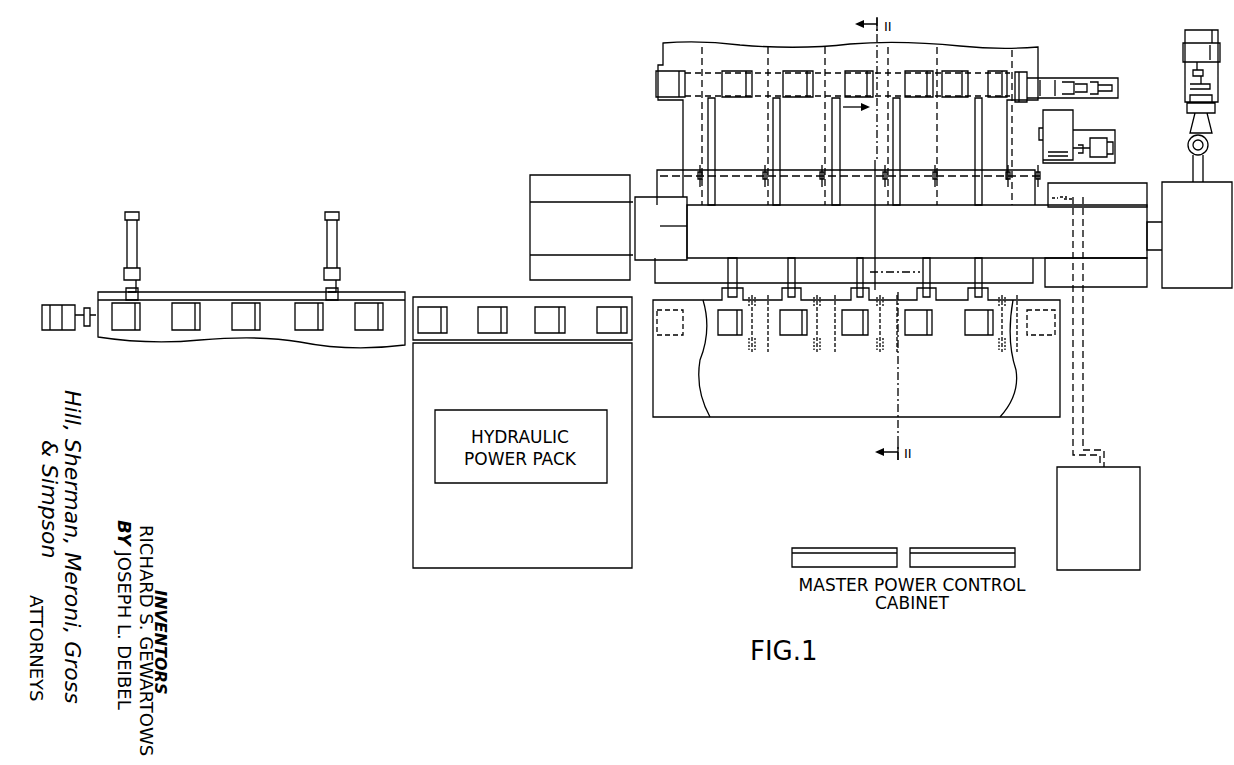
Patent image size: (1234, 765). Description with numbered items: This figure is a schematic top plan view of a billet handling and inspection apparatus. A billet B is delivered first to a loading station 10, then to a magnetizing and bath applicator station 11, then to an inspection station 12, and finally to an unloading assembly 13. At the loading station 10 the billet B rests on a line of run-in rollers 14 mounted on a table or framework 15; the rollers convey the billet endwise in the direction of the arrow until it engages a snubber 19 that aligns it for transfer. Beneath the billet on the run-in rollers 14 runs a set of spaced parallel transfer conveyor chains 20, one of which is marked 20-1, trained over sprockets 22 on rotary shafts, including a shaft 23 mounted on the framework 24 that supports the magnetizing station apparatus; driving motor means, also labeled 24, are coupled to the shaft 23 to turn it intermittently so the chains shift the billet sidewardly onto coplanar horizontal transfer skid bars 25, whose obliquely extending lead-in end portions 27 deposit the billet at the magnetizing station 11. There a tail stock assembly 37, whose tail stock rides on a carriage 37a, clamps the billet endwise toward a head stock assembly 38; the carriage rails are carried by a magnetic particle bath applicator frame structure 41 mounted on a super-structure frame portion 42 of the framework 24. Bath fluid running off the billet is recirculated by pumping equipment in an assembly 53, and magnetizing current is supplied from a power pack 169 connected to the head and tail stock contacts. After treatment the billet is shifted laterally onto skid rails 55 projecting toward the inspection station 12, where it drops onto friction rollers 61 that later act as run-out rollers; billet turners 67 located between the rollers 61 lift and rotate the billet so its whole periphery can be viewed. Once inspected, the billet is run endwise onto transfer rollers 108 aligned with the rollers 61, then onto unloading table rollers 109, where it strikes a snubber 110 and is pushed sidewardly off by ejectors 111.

The loading station 10 is at (635, 102).
The magnetizing and bath applicator station 11 is at (603, 159).
The inspection station 12 is at (786, 428).
The unloading assembly 13 is at (241, 232).
The run-in rollers 14 is at (738, 72).
The table or framework 15 is at (1030, 73).
The snubber 19 is at (1030, 86).
The transfer conveyor chains 20 is at (703, 124).
The guide line 20-1 is at (781, 129).
The wheels or sprockets 22 is at (822, 170).
The shaft 23 is at (975, 177).
The framework 24 is at (1100, 133).
The transfer skid bars 25 is at (714, 146).
The lead-in end portions 27 is at (768, 204).
The tail stock assembly 37 is at (628, 232).
The carriage 37a is at (688, 228).
The head stock assembly 38 is at (1116, 196).
The magnetic particle bath applicator frame structure 41 is at (870, 212).
The super-structure frame portion 42 is at (535, 190).
The pumping equipment assembly 53 is at (1195, 268).
The skid rails 55 is at (787, 271).
The friction rollers 61 is at (728, 336).
The billet turners 67 is at (760, 352).
The transfer rollers 108 is at (543, 312).
The unloading table rollers 109 is at (237, 310).
The snubber 110 is at (82, 306).
The ejectors 111 is at (128, 290).
The power pack 169 is at (1057, 500).
The billet B is at (690, 70).